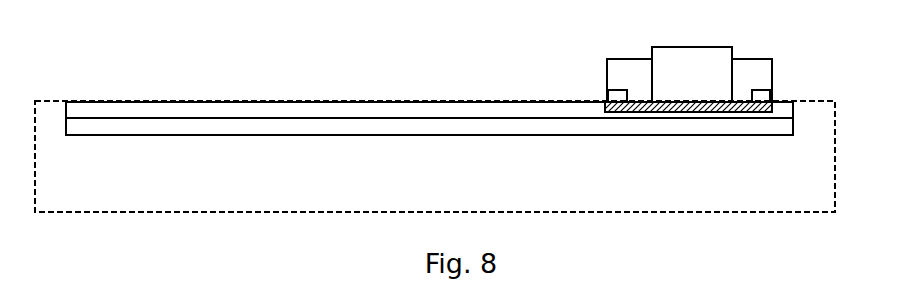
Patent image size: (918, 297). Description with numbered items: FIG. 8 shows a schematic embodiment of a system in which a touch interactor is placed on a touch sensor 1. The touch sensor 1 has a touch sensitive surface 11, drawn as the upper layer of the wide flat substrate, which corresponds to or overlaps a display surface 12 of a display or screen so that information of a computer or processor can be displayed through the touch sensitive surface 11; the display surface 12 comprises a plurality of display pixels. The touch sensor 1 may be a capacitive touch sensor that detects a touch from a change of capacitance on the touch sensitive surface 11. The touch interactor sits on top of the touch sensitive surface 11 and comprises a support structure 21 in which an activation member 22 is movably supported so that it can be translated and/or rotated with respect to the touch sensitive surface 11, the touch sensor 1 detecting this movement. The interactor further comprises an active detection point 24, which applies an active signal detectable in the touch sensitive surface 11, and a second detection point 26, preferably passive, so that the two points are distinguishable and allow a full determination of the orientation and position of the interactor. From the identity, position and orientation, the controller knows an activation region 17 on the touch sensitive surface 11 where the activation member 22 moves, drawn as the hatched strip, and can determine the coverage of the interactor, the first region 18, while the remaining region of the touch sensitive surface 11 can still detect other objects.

The touch sensor 1 is at (238, 188).
The touch sensitive surface 11 is at (470, 107).
The display surface 12 is at (282, 125).
The activation region 17 is at (705, 118).
The first region 18 is at (750, 113).
The support structure 21 is at (768, 83).
The activation member 22 is at (670, 90).
The active detection point 24 is at (610, 93).
The second detection point 26 is at (773, 95).